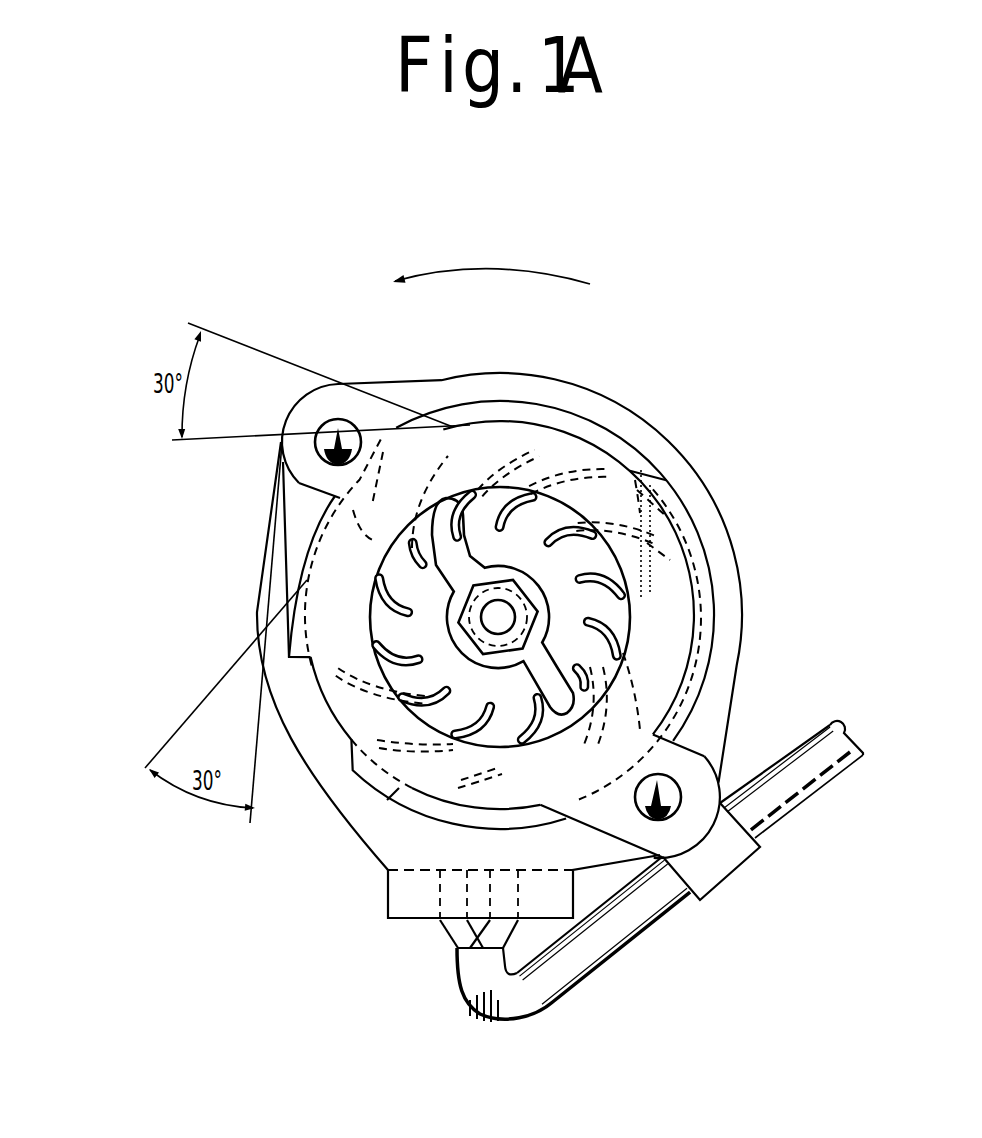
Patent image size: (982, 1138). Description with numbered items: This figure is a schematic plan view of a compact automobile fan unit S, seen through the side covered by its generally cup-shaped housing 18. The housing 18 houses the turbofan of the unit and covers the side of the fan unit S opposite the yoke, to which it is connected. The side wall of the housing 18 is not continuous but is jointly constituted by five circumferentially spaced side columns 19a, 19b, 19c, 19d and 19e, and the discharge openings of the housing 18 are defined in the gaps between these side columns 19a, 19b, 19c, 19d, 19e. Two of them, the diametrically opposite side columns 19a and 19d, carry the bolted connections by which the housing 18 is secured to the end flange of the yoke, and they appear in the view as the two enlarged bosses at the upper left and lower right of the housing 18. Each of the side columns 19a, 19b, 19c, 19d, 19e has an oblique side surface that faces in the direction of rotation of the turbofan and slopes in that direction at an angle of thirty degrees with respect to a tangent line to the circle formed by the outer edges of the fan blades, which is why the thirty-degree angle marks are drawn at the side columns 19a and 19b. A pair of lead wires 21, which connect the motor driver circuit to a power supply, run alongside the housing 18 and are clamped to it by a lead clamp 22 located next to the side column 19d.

The compact automobile fan unit S is at (96, 313).
The housing 18 is at (723, 628).
The side column 19a is at (337, 402).
The side column 19b is at (297, 611).
The side column 19c is at (397, 790).
The side column 19d is at (692, 770).
The side column 19e is at (685, 533).
The lead wires 21 is at (630, 912).
The lead clamp 22 is at (737, 860).